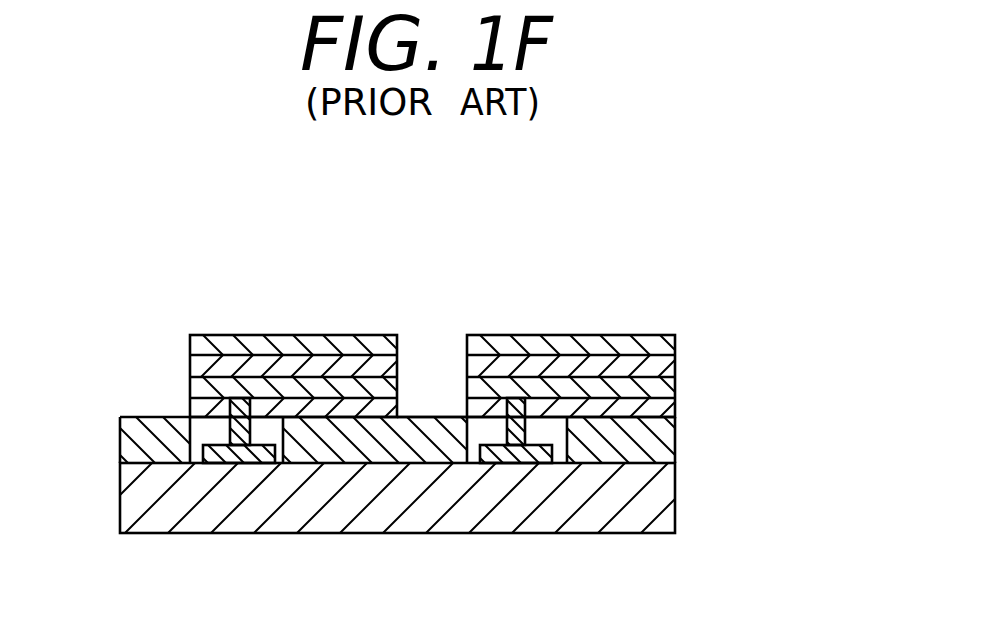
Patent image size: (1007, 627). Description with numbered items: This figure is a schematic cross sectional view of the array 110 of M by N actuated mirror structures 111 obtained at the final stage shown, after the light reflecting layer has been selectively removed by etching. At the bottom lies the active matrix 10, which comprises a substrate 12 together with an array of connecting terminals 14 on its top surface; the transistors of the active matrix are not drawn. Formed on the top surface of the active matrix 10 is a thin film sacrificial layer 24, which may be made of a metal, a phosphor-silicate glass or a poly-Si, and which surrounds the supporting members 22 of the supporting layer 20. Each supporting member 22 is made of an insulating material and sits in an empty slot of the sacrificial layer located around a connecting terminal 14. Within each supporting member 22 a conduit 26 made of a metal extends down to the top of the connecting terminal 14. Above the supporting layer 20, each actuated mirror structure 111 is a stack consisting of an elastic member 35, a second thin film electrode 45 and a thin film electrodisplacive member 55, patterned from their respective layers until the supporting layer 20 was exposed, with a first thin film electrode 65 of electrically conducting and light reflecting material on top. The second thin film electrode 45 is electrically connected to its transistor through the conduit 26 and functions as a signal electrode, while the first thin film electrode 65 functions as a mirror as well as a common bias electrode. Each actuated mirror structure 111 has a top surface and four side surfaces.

The array of actuated mirror structures 110 is at (720, 178).
The actuated mirror structure 111 is at (400, 222).
The active matrix 10 is at (108, 443).
The substrate 12 is at (362, 517).
The connecting terminal 14 is at (243, 457).
The supporting layer 20 is at (412, 435).
The supporting member 22 is at (272, 424).
The thin film sacrificial layer 24 is at (653, 438).
The conduit 26 is at (243, 405).
The elastic member 35 is at (657, 410).
The second thin film electrode 45 is at (659, 388).
The thin film electrodisplacive member 55 is at (663, 353).
The first thin film electrode 65 is at (661, 338).